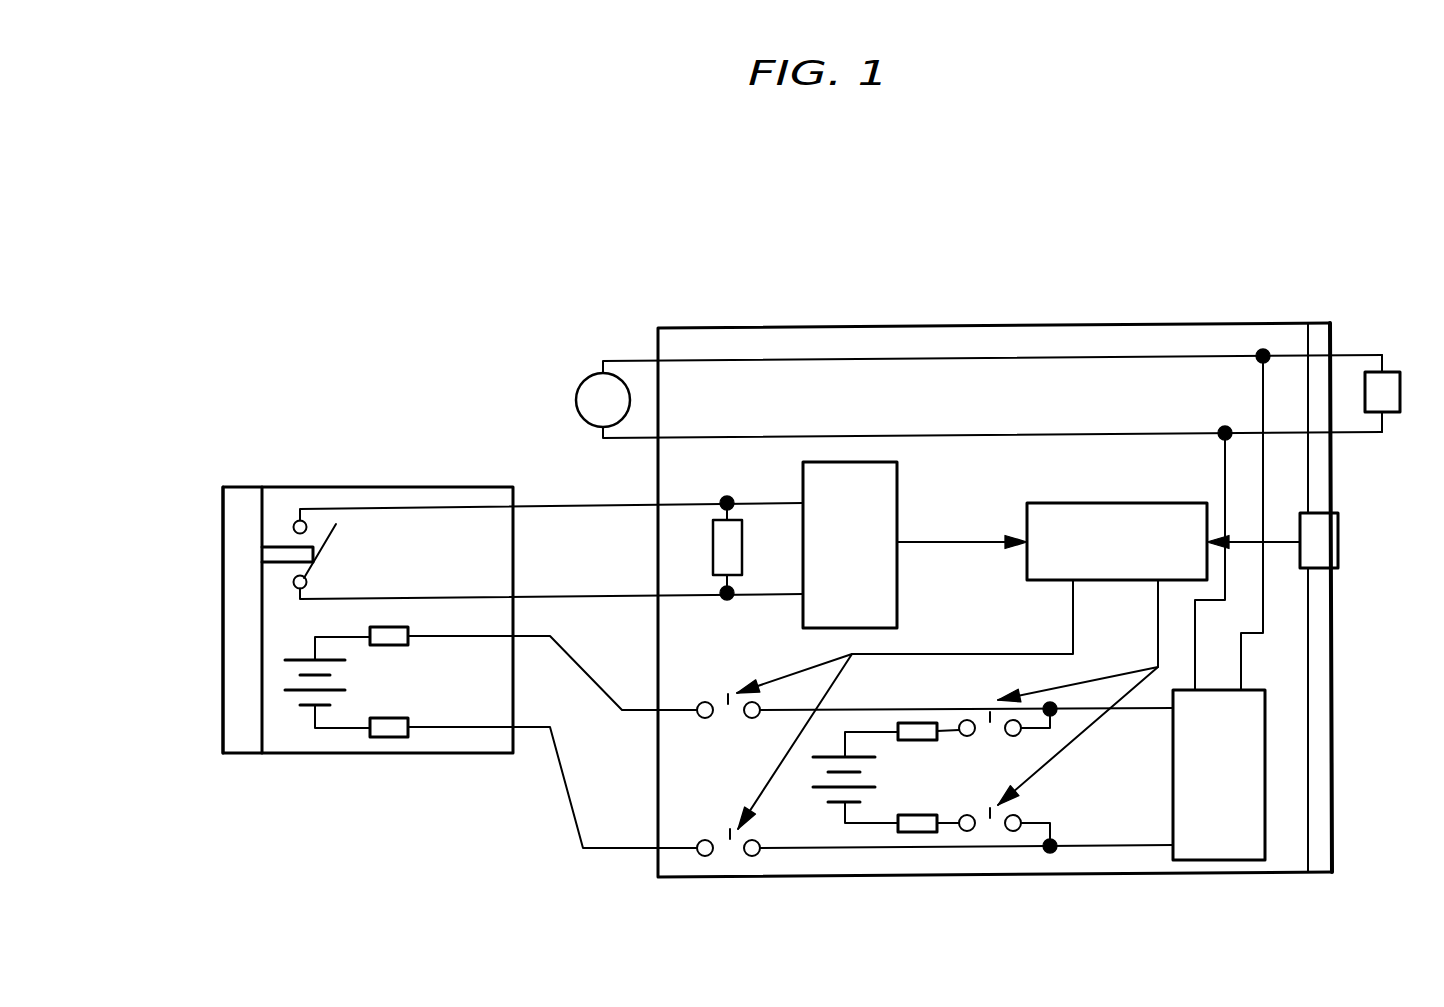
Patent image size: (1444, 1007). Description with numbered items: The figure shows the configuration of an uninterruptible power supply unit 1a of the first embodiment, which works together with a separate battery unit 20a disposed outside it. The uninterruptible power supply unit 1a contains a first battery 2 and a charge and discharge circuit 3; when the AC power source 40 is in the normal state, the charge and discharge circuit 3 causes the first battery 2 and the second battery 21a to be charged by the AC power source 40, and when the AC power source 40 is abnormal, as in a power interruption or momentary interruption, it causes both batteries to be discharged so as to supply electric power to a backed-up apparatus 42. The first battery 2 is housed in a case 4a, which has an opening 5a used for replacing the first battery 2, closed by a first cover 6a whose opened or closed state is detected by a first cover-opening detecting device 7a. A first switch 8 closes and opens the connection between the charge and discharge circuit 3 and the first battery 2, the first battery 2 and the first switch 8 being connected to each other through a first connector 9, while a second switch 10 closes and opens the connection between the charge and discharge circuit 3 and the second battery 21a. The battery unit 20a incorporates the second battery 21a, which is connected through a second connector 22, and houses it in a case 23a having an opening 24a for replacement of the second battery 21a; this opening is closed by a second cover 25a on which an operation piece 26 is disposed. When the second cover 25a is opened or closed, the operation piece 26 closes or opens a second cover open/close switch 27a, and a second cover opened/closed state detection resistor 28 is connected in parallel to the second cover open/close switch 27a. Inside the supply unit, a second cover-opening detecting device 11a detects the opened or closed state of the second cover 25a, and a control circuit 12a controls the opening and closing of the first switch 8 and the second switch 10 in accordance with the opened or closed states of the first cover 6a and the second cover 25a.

The uninterruptible power supply unit 1a is at (903, 250).
The first battery 2 is at (812, 783).
The charge and discharge circuit 3 is at (1265, 772).
The case 4a is at (990, 324).
The opening 5a is at (1308, 323).
The first cover 6a is at (1332, 665).
The first cover-opening detecting device 7a is at (1338, 540).
The first switch 8 is at (986, 724).
The first connector 9 is at (920, 740).
The second switch 10 is at (718, 718).
The second cover-opening detecting device 11a is at (903, 497).
The control circuit 12a is at (1115, 503).
The battery unit 20a is at (366, 400).
The second battery 21a is at (295, 657).
The second connector 22 is at (390, 640).
The case 23a is at (440, 486).
The opening 24a is at (262, 486).
The second cover 25a is at (223, 486).
The operation piece 26 is at (262, 553).
The second cover open/close switch 27a is at (338, 540).
The second cover opened/closed state detection resistor 28 is at (725, 560).
The AC power source 40 is at (590, 378).
The backed-up apparatus 42 is at (1395, 372).